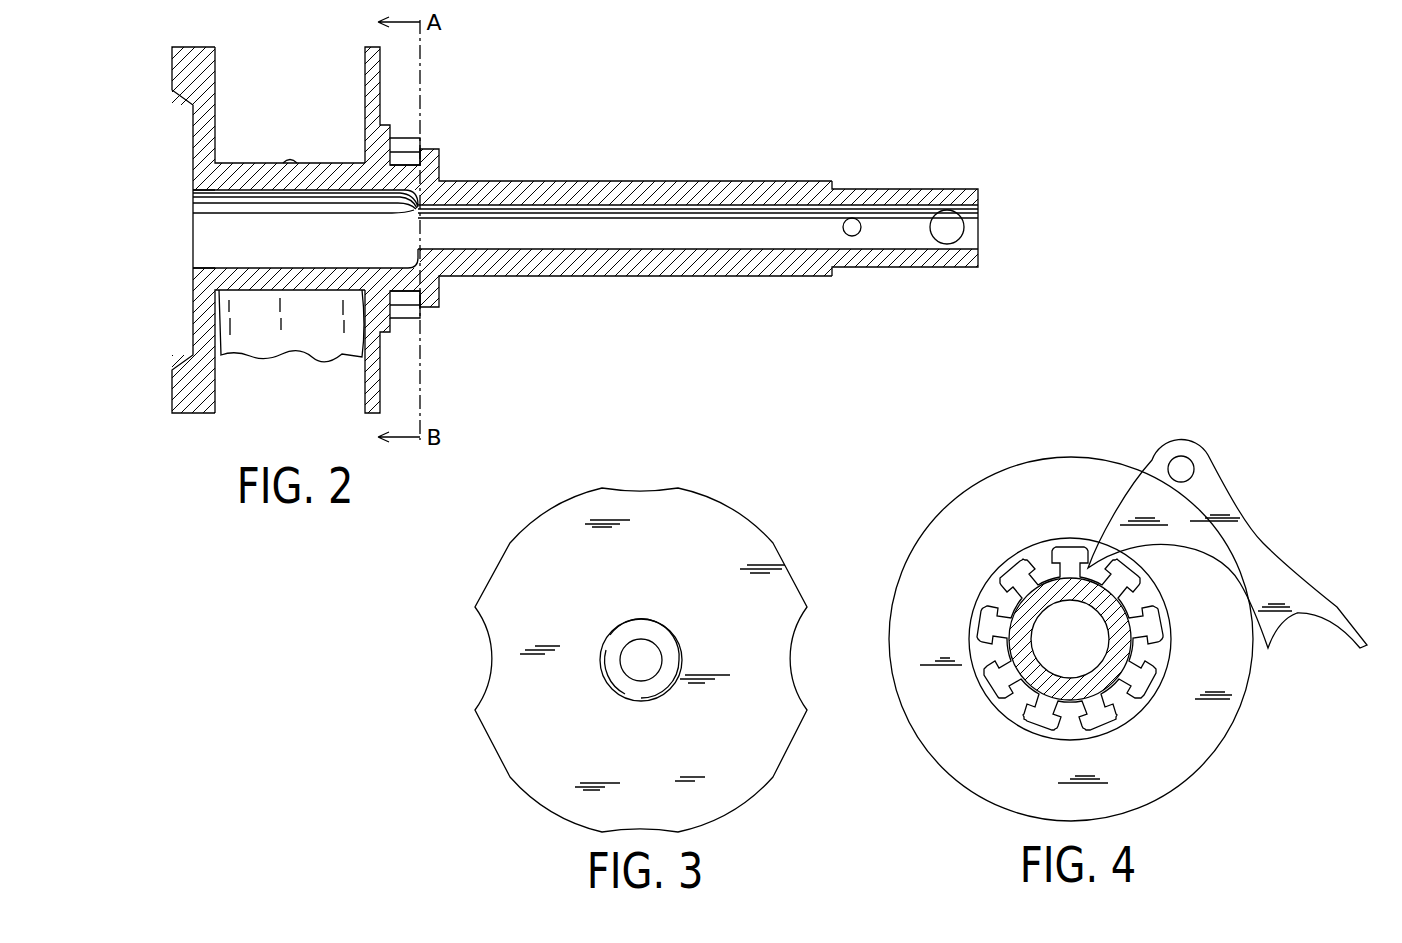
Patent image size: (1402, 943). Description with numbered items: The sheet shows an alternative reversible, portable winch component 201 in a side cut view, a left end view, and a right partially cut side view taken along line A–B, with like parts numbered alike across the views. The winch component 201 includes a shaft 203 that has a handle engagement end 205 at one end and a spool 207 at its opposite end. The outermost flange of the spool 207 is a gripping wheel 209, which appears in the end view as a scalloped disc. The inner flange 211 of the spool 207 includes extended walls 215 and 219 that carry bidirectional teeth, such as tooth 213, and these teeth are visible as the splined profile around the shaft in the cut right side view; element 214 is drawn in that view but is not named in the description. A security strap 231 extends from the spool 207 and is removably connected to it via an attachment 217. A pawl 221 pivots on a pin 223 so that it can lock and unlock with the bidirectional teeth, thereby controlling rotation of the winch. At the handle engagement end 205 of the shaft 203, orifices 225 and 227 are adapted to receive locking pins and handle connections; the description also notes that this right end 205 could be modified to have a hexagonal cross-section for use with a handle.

In FIG. 2, the winch component 201 is at (147, 153).
In FIG. 3, the winch component 201 is at (447, 745).
In FIG. 2, the shaft 203 is at (577, 180).
In FIG. 3, the shaft 203 is at (677, 653).
In FIG. 2, the handle engagement end 205 is at (876, 186).
In FIG. 2, the spool 207 is at (239, 163).
In FIG. 2, the gripping wheel 209 is at (216, 80).
In FIG. 3, the gripping wheel 209 is at (697, 512).
In FIG. 2, the inner flange 211 is at (364, 68).
In FIG. 4, the inner flange 211 is at (948, 762).
In FIG. 2, the tooth 213 is at (403, 203).
In FIG. 4, the tooth 213 is at (1056, 528).
In FIG. 4, the annular recess 214 is at (1028, 539).
In FIG. 2, the extended wall 215 is at (440, 159).
In FIG. 2, the attachment 217 is at (291, 160).
In FIG. 2, the extended wall 219 is at (403, 337).
In FIG. 4, the pawl 221 is at (1262, 535).
In FIG. 4, the pin 223 is at (1185, 447).
In FIG. 2, the orifice 225 is at (862, 236).
In FIG. 2, the orifice 227 is at (966, 222).
In FIG. 2, the security strap 231 is at (298, 354).